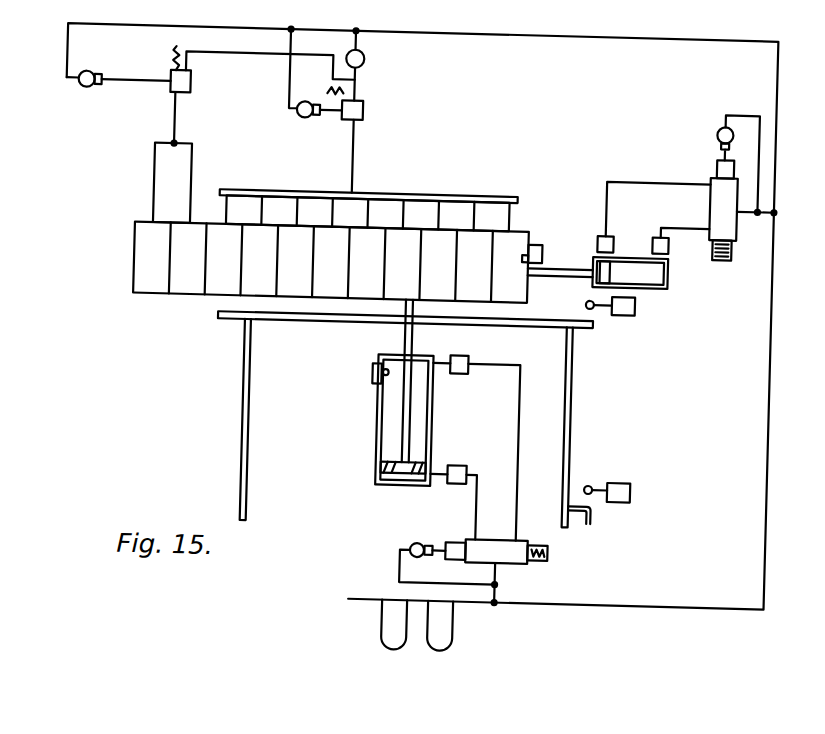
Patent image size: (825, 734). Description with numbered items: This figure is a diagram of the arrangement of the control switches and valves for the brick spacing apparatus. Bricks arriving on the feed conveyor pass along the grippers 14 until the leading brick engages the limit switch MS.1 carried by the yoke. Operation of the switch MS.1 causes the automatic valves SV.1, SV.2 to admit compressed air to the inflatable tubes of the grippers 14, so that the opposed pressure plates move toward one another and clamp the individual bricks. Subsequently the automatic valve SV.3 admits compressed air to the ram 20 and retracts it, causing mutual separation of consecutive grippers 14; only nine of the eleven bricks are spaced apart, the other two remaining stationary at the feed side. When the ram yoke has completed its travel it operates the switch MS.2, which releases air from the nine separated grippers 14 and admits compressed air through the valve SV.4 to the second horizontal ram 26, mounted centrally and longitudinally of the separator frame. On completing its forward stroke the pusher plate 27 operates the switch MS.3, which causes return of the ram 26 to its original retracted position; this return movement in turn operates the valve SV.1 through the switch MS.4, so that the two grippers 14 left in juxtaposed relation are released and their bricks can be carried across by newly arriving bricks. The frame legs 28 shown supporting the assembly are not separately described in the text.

The grippers 14 is at (151, 289).
The ram 20 is at (648, 272).
The second horizontal ram 26 is at (387, 446).
The pusher plate 27 is at (322, 323).
The legs 28 is at (254, 416).
The automatic valve SV.1 is at (88, 95).
The automatic valve SV.2 is at (300, 121).
The automatic valve SV.3 is at (713, 125).
The valve SV.4 is at (424, 542).
The limit switch MS.1 is at (537, 241).
The switch MS.2 is at (624, 310).
The switch MS.3 is at (377, 384).
The switch MS.4 is at (623, 479).